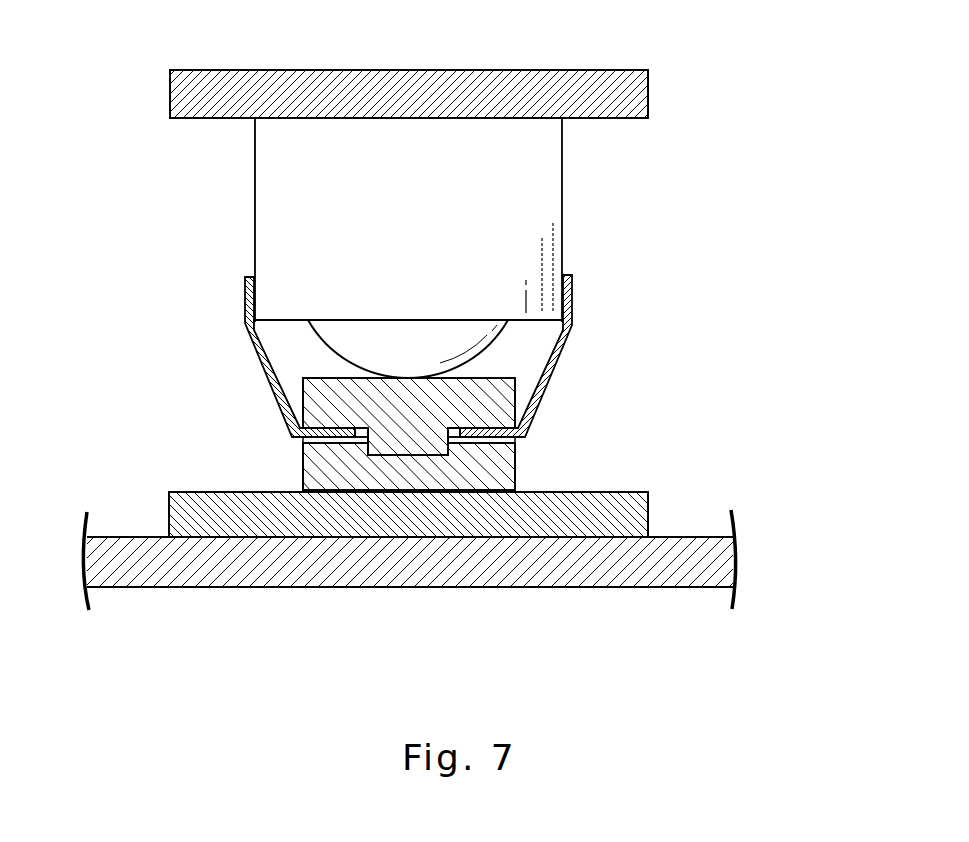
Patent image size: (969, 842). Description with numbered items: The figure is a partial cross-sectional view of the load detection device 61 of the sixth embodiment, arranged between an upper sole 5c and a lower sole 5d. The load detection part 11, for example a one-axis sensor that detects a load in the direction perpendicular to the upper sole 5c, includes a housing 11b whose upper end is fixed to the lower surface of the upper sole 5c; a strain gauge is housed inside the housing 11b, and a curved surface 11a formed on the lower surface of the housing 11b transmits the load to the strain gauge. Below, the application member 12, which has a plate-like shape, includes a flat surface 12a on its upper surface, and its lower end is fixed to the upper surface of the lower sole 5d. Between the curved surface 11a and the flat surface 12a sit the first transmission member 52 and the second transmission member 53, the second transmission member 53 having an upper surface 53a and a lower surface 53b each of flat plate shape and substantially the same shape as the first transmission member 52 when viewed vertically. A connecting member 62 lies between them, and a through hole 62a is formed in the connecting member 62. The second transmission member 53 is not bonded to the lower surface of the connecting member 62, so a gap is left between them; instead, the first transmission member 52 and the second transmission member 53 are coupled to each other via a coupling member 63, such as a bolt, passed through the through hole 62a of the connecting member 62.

The upper sole 5c is at (612, 80).
The lower sole 5d is at (662, 580).
The load detection part 11 is at (566, 163).
The curved surface 11a is at (330, 347).
The housing 11b is at (548, 203).
The application member 12 is at (652, 512).
The flat surface 12a is at (190, 492).
The first transmission member 52 is at (508, 392).
The second transmission member 53 is at (518, 480).
The upper surface 53a is at (505, 440).
The lower surface 53b is at (316, 490).
The load detection device 61 is at (232, 208).
The connecting member 62 is at (268, 392).
The through hole 62a is at (453, 425).
The coupling member 63 is at (300, 440).